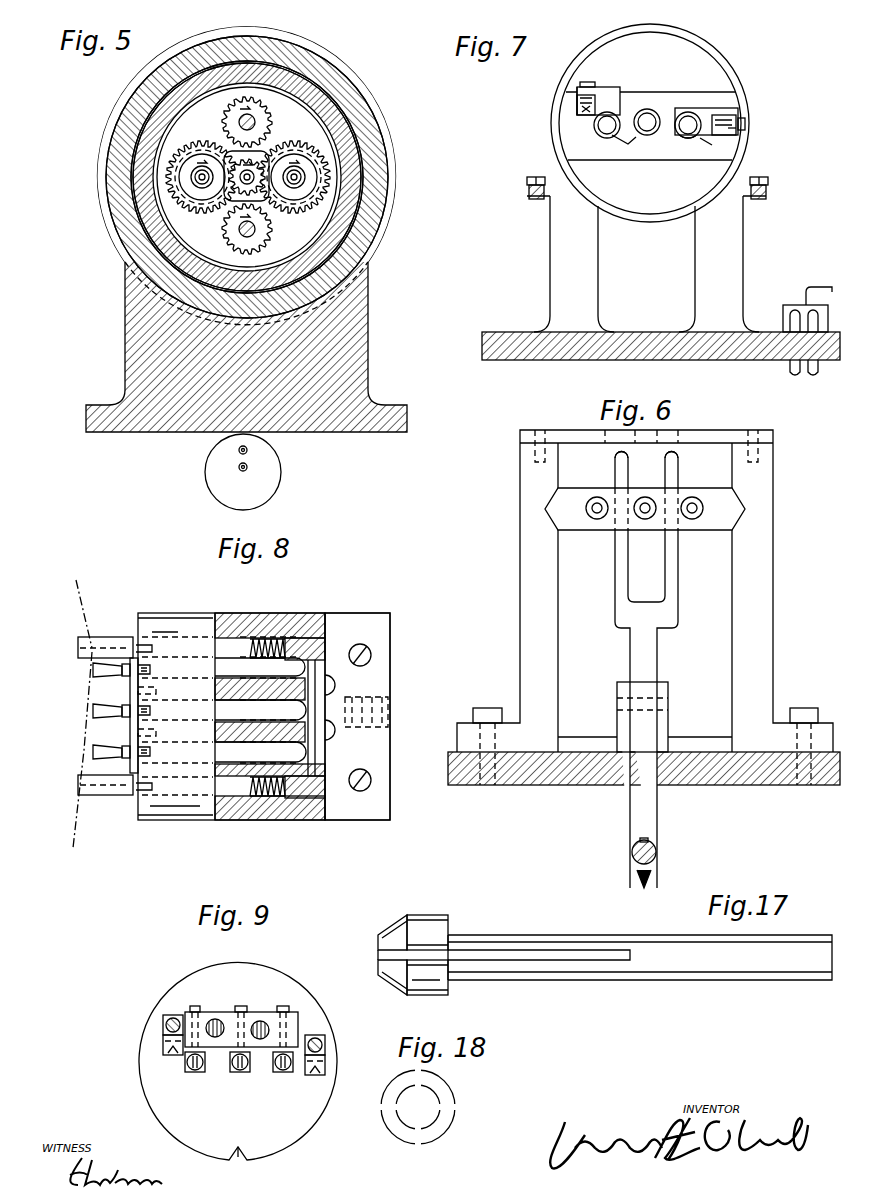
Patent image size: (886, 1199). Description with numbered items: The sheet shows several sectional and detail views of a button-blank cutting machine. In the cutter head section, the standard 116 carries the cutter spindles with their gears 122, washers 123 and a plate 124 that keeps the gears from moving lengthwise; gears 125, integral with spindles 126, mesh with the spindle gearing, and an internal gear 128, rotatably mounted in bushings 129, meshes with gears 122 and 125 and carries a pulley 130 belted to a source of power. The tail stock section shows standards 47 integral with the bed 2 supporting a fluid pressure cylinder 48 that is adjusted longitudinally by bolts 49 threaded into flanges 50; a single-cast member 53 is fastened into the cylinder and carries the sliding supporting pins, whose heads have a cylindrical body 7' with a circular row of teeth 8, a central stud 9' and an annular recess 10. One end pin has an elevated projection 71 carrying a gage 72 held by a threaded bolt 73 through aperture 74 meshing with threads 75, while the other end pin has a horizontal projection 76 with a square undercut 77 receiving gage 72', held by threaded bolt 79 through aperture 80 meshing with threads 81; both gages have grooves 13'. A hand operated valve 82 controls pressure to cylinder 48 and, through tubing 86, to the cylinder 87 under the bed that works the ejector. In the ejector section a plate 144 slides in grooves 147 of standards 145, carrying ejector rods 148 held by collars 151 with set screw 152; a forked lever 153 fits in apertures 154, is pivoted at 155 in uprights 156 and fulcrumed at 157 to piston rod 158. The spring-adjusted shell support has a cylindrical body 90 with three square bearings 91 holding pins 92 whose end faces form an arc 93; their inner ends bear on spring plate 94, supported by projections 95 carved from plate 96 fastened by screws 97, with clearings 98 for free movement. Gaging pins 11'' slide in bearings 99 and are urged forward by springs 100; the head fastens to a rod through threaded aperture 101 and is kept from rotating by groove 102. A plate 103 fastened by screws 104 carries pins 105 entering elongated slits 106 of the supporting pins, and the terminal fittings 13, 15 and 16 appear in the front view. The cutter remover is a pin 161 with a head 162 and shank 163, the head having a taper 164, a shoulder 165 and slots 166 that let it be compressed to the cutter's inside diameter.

In FIG. 6, the bed 2 is at (600, 785).
In FIG. 7, the cylindrical body 7' is at (647, 135).
In FIG. 7, the circular row of teeth 8 is at (636, 137).
In FIG. 7, the central stud 9' is at (647, 112).
In FIG. 7, the annular recess 10 is at (684, 110).
In FIG. 8, the gaging pins 11'' is at (95, 731).
In FIG. 9, the gaging pins 11'' is at (245, 1048).
In FIG. 9, the terminal clip 13 is at (241, 1072).
In FIG. 7, the grooves 13' is at (653, 131).
In FIG. 8, the terminal screw 15 is at (133, 792).
In FIG. 9, the terminal screw 15 is at (325, 1038).
In FIG. 8, the terminal plate 16 is at (136, 775).
In FIG. 9, the terminal plate 16 is at (322, 1042).
In FIG. 7, the standards 47 is at (646, 264).
In FIG. 7, the fluid pressure cylinder 48 is at (725, 72).
In FIG. 7, the bolts 49 is at (760, 177).
In FIG. 7, the flanges 50 is at (766, 195).
In FIG. 7, the member 53 is at (595, 72).
In FIG. 7, the elevated projection 71 is at (598, 101).
In FIG. 7, the gage 72 is at (552, 117).
In FIG. 7, the gage 72' is at (768, 103).
In FIG. 7, the threaded bolt 73 is at (590, 87).
In FIG. 7, the aperture 74 is at (577, 96).
In FIG. 7, the threads 75 is at (578, 104).
In FIG. 7, the projection 76 is at (702, 108).
In FIG. 7, the square undercut 77 is at (722, 118).
In FIG. 7, the threaded bolt 79 is at (746, 122).
In FIG. 7, the aperture 80 is at (740, 130).
In FIG. 7, the threads 81 is at (712, 134).
In FIG. 7, the hand operated valve 82 is at (783, 308).
In FIG. 7, the tubing 86 is at (813, 374).
In FIG. 5, the cylinder 87 is at (243, 472).
In FIG. 8, the cylindrical body 90 is at (200, 820).
In FIG. 9, the cylindrical body 90 is at (238, 1061).
In FIG. 9, the bearings 91 is at (283, 1072).
In FIG. 8, the pins 92 is at (270, 717).
In FIG. 9, the pins 92 is at (285, 1070).
In FIG. 8, the arc 93 is at (91, 661).
In FIG. 8, the spring plate 94 is at (315, 640).
In FIG. 8, the projections 95 is at (326, 730).
In FIG. 8, the plate 96 is at (357, 716).
In FIG. 8, the screws 97 is at (360, 714).
In FIG. 8, the clearings 98 is at (308, 800).
In FIG. 8, the bearings 99 is at (240, 820).
In FIG. 8, the springs 100 is at (278, 800).
In FIG. 8, the threaded aperture 101 is at (388, 712).
In FIG. 9, the groove 102 is at (244, 1170).
In FIG. 9, the plate 103 is at (298, 1016).
In FIG. 8, the screws 104 is at (163, 712).
In FIG. 9, the screws 104 is at (262, 1020).
In FIG. 8, the pins 105 is at (122, 711).
In FIG. 9, the pins 105 is at (284, 1006).
In FIG. 8, the elongated slits 106 is at (136, 758).
In FIG. 5, the standard 116 is at (352, 250).
In FIG. 5, the gears 122 is at (330, 170).
In FIG. 5, the washers 123 is at (250, 180).
In FIG. 5, the plate 124 is at (247, 180).
In FIG. 5, the gears 125 is at (222, 216).
In FIG. 5, the spindles 126 is at (256, 229).
In FIG. 5, the internal gear 128 is at (362, 140).
In FIG. 5, the bushings 129 is at (368, 222).
In FIG. 5, the pulley 130 is at (388, 203).
In FIG. 6, the plate 144 is at (600, 528).
In FIG. 6, the standards 145 is at (645, 607).
In FIG. 6, the grooves 147 is at (742, 522).
In FIG. 6, the ejector rods 148 is at (645, 520).
In FIG. 6, the collars 151 is at (690, 520).
In FIG. 6, the set screw 152 is at (690, 502).
In FIG. 6, the forked lever 153 is at (646, 670).
In FIG. 6, the apertures 154 is at (665, 488).
In FIG. 6, the pivot 155 is at (668, 703).
In FIG. 6, the uprights 156 is at (617, 686).
In FIG. 6, the fulcrum 157 is at (632, 852).
In FIG. 6, the piston rod 158 is at (652, 848).
In FIG. 17, the pin 161 is at (640, 947).
In FIG. 17, the head 162 is at (427, 955).
In FIG. 18, the head 162 is at (447, 1128).
In FIG. 17, the shank 163 is at (581, 960).
In FIG. 17, the taper 164 is at (400, 918).
In FIG. 18, the taper 164 is at (395, 1128).
In FIG. 17, the shoulder 165 is at (446, 918).
In FIG. 17, the slots 166 is at (378, 955).
In FIG. 18, the slots 166 is at (418, 1147).